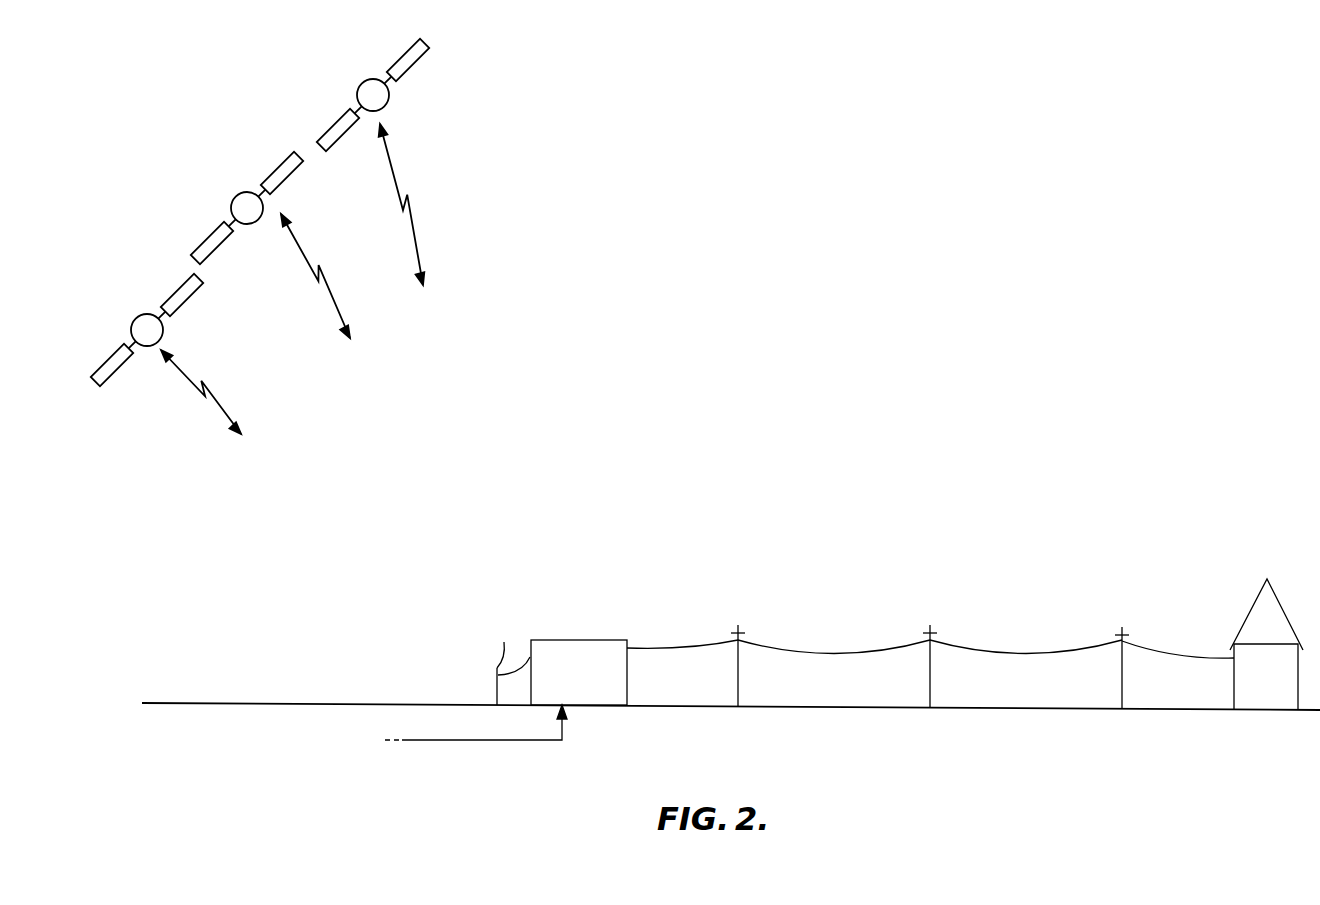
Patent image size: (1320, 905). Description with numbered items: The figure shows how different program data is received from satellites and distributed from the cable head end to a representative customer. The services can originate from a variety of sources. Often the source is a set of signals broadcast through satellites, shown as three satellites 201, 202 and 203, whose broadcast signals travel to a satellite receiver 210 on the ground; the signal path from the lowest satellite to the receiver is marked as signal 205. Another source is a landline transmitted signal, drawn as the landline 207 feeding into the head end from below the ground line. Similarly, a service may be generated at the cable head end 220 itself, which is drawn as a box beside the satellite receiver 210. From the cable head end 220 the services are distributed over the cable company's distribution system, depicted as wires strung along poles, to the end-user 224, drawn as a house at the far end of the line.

The satellite 201 is at (152, 313).
The satellite 202 is at (238, 193).
The satellite 203 is at (363, 83).
The satellite signal 205 is at (192, 392).
The landline 207 is at (423, 742).
The satellite receiver 210 is at (479, 672).
The cable head end 220 is at (580, 640).
The end-user 224 is at (1273, 690).